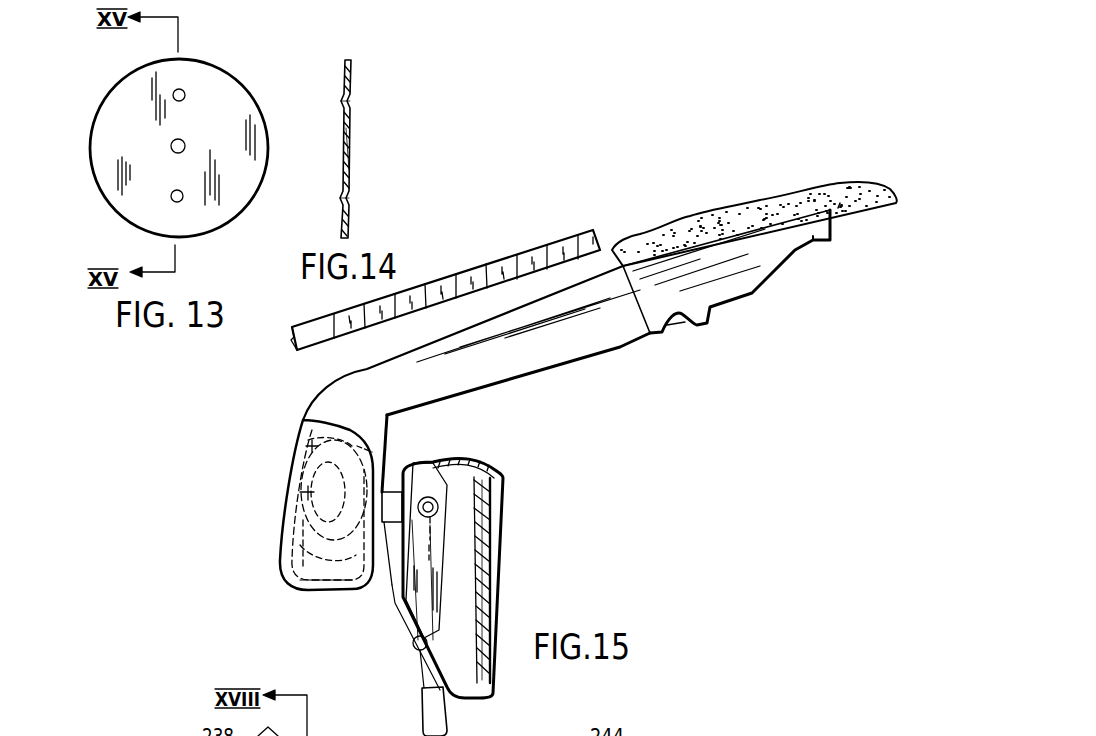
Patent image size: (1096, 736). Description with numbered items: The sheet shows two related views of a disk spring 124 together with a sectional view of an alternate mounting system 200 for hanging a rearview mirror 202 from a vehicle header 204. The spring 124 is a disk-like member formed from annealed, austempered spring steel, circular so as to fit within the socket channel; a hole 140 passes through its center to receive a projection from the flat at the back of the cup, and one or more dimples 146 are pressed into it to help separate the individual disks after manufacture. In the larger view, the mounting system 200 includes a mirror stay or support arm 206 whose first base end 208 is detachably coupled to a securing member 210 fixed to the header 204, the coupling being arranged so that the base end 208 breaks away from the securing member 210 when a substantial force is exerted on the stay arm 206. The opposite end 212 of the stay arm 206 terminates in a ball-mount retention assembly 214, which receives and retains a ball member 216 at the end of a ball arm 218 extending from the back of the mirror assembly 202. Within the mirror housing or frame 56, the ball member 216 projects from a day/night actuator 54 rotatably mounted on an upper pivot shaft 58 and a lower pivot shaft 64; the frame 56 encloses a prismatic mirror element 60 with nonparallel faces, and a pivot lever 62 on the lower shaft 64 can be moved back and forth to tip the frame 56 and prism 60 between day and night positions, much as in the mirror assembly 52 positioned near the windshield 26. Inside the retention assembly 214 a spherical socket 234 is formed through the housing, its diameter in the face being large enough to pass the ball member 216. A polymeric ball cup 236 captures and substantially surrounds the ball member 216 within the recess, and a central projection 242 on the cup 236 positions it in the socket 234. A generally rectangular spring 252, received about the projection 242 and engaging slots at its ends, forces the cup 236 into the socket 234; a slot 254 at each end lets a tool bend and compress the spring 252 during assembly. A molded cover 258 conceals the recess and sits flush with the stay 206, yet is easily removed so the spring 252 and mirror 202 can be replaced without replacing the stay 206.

In FIG. 15, the windshield 26 is at (494, 267).
In FIG. 15, the mirror assembly 52 is at (507, 511).
In FIG. 15, the day/night pivot actuator 54 is at (421, 612).
In FIG. 15, the mirror housing or frame 56 is at (498, 563).
In FIG. 15, the upper pivot shaft 58 is at (439, 513).
In FIG. 15, the prismatic mirror element 60 is at (484, 586).
In FIG. 15, the pivot lever 62 is at (440, 723).
In FIG. 15, the lower pivot shaft 64 is at (416, 644).
In FIG. 13, the spring 124 is at (110, 160).
In FIG. 14, the spring 124 is at (350, 114).
In FIG. 13, the hole 140 is at (185, 146).
In FIG. 14, the hole 140 is at (349, 150).
In FIG. 13, the dimples 146 is at (185, 90).
In FIG. 14, the dimples 146 is at (341, 100).
In FIG. 15, the mounting system 200 is at (727, 403).
In FIG. 15, the rearview mirror 202 is at (477, 461).
In FIG. 15, the vehicle header 204 is at (838, 212).
In FIG. 15, the mirror stay or support arm 206 is at (352, 387).
In FIG. 15, the first base end 208 is at (755, 297).
In FIG. 15, the securing member 210 is at (815, 243).
In FIG. 15, the opposite end 212 is at (307, 405).
In FIG. 15, the ball-mount retention assembly 214 is at (314, 595).
In FIG. 15, the ball member 216 is at (312, 473).
In FIG. 15, the ball arm 218 is at (391, 490).
In FIG. 15, the spherical hole or socket 234 is at (370, 448).
In FIG. 15, the ball cup 236 is at (310, 440).
In FIG. 15, the central projection 242 is at (304, 497).
In FIG. 15, the spring 252 is at (316, 533).
In FIG. 15, the slot 254 is at (670, 735).
In FIG. 15, the cover 258 is at (293, 562).